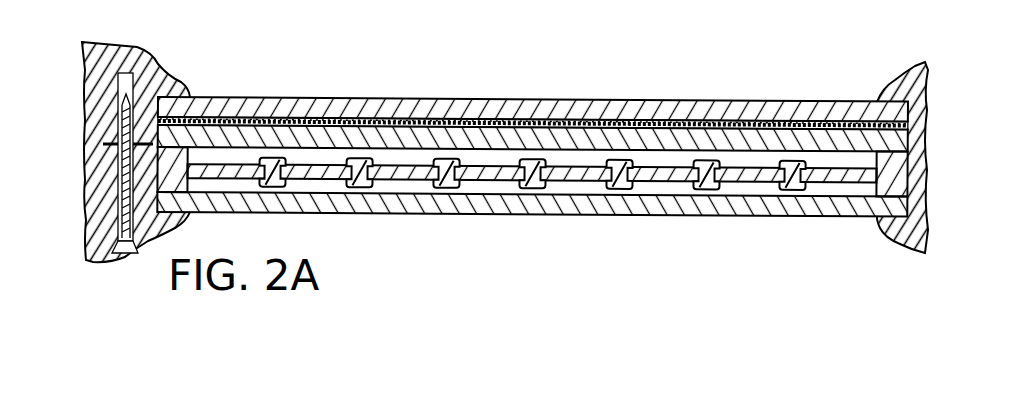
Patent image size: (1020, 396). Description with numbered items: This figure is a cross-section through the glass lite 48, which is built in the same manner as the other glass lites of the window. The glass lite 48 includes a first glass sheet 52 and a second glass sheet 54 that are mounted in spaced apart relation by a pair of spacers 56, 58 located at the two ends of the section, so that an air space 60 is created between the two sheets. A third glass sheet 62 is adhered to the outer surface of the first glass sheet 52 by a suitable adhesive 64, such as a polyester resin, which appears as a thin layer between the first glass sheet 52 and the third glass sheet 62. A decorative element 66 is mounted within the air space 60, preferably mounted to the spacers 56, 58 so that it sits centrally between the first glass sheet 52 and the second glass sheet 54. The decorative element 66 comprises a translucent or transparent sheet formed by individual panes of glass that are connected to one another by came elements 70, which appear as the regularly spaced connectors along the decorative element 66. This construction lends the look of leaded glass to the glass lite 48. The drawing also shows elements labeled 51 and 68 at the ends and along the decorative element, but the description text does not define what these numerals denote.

The glass lite 48 is at (750, 67).
The mounting block 51 is at (180, 73).
The first glass sheet 52 is at (478, 138).
The second glass sheet 54 is at (560, 206).
The spacer 56 is at (192, 216).
The spacer 58 is at (886, 189).
The air space 60 is at (482, 186).
The third glass sheet 62 is at (632, 106).
The adhesive 64 is at (405, 128).
The decorative element 66 is at (666, 186).
The fastener 68 is at (398, 185).
The came elements 70 is at (353, 156).